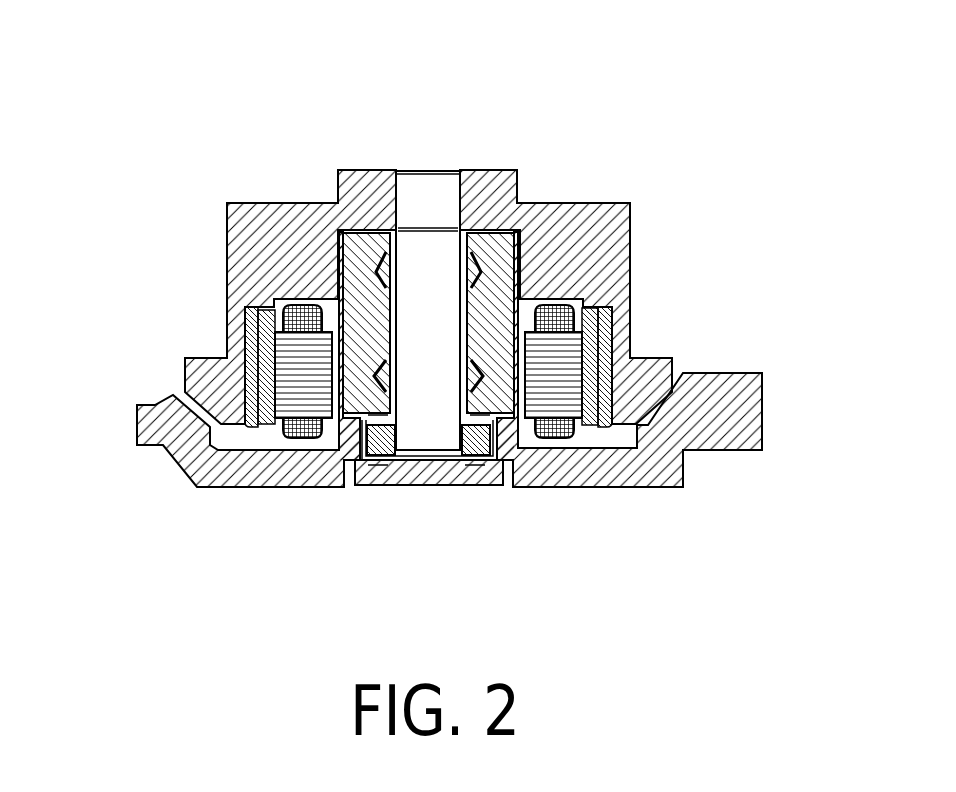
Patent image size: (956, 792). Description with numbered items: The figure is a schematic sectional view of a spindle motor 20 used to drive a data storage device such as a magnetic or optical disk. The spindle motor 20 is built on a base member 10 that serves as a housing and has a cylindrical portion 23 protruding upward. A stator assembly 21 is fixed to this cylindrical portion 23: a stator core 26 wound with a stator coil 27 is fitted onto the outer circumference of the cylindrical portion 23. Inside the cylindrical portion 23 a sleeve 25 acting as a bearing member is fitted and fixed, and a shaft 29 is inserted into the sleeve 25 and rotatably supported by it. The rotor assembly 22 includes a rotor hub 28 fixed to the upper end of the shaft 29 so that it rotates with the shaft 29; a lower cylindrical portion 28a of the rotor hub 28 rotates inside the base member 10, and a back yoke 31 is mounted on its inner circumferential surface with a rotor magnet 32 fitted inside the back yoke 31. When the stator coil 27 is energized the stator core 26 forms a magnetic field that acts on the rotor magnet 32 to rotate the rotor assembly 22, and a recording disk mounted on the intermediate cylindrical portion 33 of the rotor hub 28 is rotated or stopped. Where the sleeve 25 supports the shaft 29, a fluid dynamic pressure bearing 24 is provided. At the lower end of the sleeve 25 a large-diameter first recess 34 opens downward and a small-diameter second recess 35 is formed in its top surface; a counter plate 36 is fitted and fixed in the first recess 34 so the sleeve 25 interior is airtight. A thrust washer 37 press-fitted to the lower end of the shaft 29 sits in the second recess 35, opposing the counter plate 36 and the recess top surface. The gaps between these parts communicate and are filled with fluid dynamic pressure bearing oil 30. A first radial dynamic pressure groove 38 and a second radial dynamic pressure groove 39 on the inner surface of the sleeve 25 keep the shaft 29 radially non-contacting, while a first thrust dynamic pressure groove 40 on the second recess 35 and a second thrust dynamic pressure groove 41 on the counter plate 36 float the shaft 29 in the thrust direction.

The base member 10 is at (449, 395).
The spindle motor 20 is at (542, 100).
The stator assembly 21 is at (438, 454).
The rotor assembly 22 is at (435, 279).
The cylindrical portion 23 is at (518, 443).
The fluid dynamic pressure bearing 24 is at (328, 468).
The sleeve 25 is at (528, 240).
The stator core 26 is at (547, 392).
The stator coil 27 is at (560, 432).
The rotor hub 28 is at (607, 272).
The lower cylindrical portion 28a is at (660, 372).
The shaft 29 is at (423, 270).
The fluid dynamic pressure bearing oil 30 is at (497, 250).
The back yoke 31 is at (605, 325).
The rotor magnet 32 is at (617, 350).
The intermediate cylindrical portion 33 is at (242, 253).
The first recess 34 is at (346, 458).
The second recess 35 is at (340, 458).
The counter plate 36 is at (405, 473).
The thrust washer 37 is at (374, 452).
The first radial dynamic pressure groove 38 is at (362, 243).
The second radial dynamic pressure groove 39 is at (368, 412).
The first thrust dynamic pressure groove 40 is at (356, 398).
The second thrust dynamic pressure groove 41 is at (463, 472).